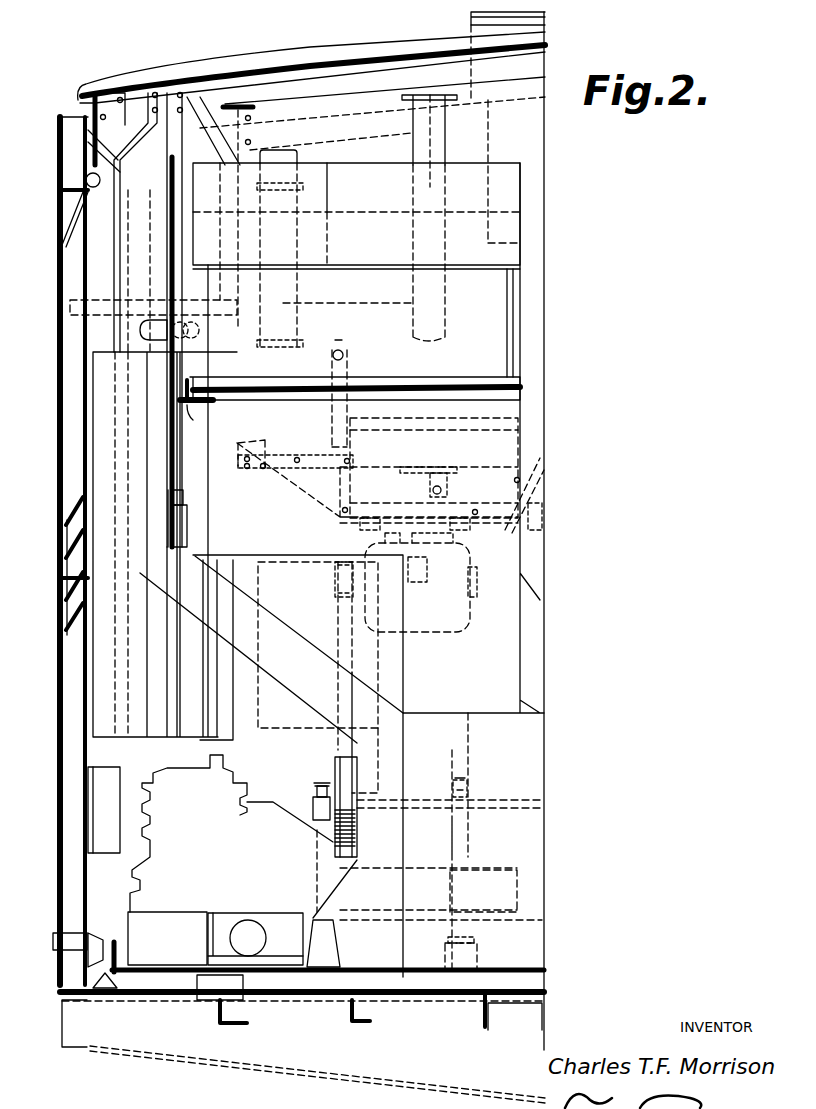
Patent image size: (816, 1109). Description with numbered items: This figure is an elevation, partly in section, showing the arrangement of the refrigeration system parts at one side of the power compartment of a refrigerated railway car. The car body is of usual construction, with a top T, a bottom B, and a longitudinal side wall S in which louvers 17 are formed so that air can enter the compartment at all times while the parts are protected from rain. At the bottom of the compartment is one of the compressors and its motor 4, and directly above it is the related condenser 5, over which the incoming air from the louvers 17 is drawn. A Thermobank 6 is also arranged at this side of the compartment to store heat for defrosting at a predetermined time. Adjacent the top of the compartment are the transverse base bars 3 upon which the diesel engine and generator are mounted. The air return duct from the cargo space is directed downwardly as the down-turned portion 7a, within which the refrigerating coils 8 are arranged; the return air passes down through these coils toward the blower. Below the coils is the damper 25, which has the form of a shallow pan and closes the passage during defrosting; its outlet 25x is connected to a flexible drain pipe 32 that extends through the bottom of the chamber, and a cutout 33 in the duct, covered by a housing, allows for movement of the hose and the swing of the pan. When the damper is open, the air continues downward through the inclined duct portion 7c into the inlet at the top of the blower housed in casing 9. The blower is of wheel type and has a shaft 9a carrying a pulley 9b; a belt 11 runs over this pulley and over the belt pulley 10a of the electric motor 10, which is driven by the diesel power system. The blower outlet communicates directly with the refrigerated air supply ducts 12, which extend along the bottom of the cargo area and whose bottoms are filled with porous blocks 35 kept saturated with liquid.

The top T is at (262, 76).
The side wall S is at (58, 432).
The louvers 17 is at (77, 478).
The condensers 5 is at (105, 377).
The Thermobank 6 is at (150, 296).
The down-turned portions of air return ducts 7a is at (356, 223).
The refrigerating coils 8 is at (507, 328).
The damper 25 is at (396, 392).
The outlet 25x is at (189, 405).
The cutout 33 is at (183, 497).
The drain pipe 32 is at (178, 530).
The transverse base bars 3 is at (390, 510).
The belt pulley 10a is at (332, 572).
The inclined duct portions 7c is at (270, 640).
The belt 11 is at (337, 677).
The electric motor 10 is at (435, 604).
The pulley 9b is at (333, 762).
The blower shaft 9a is at (312, 805).
The compressors and their motors 4 is at (238, 866).
The blower casing 9 is at (515, 758).
The refrigerated air supply ducts 12 is at (447, 866).
The porous blocks 35 is at (447, 922).
The bottom B is at (316, 994).